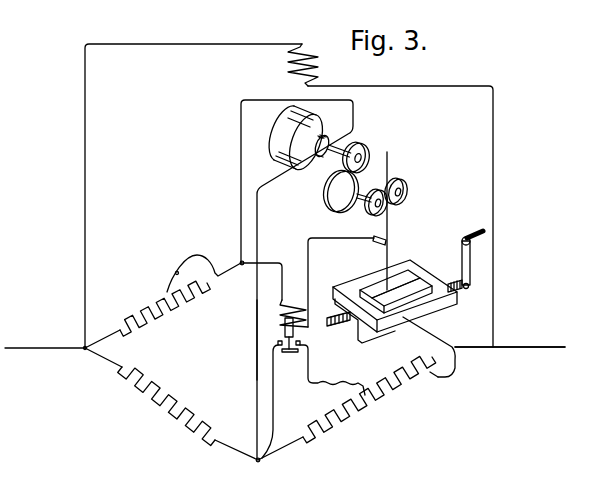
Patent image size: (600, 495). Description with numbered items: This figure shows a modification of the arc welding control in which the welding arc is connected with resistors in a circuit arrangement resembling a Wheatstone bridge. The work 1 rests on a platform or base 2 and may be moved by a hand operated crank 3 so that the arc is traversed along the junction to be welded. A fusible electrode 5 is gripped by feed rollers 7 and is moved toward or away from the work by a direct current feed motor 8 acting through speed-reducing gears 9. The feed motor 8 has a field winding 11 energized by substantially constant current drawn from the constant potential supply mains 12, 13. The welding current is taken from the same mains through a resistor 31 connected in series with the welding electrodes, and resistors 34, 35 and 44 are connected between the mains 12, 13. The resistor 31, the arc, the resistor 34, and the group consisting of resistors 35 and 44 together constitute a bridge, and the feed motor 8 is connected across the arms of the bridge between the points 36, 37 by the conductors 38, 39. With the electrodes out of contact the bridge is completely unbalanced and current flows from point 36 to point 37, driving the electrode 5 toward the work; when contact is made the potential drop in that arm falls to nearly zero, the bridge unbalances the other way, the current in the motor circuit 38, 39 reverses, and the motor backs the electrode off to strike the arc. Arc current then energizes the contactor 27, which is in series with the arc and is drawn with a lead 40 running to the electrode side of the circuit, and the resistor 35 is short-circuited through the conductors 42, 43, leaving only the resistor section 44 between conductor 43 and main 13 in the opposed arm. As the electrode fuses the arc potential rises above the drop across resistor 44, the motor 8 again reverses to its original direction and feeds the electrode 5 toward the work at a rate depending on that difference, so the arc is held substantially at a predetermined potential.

The work 1 is at (412, 274).
The platform or base 2 is at (445, 308).
The hand operated crank 3 is at (460, 259).
The fusible electrode 5 is at (394, 253).
The feed rollers 7 is at (407, 200).
The feed motor 8 is at (270, 121).
The speed-reducing gears 9 is at (326, 196).
The field winding 11 is at (286, 66).
The constant potential main 12 is at (38, 347).
The constant potential main 13 is at (541, 346).
The contactor 27 is at (289, 306).
The resistor 31 is at (145, 306).
The resistor 34 is at (152, 402).
The resistor 35 is at (355, 418).
The point 36 is at (259, 463).
The point 37 is at (240, 260).
The conductor 38 is at (256, 340).
The conductor 39 is at (241, 158).
The conductor 40 is at (306, 241).
The conductor 42 is at (276, 411).
The conductor 43 is at (318, 364).
The resistor 44 is at (410, 364).